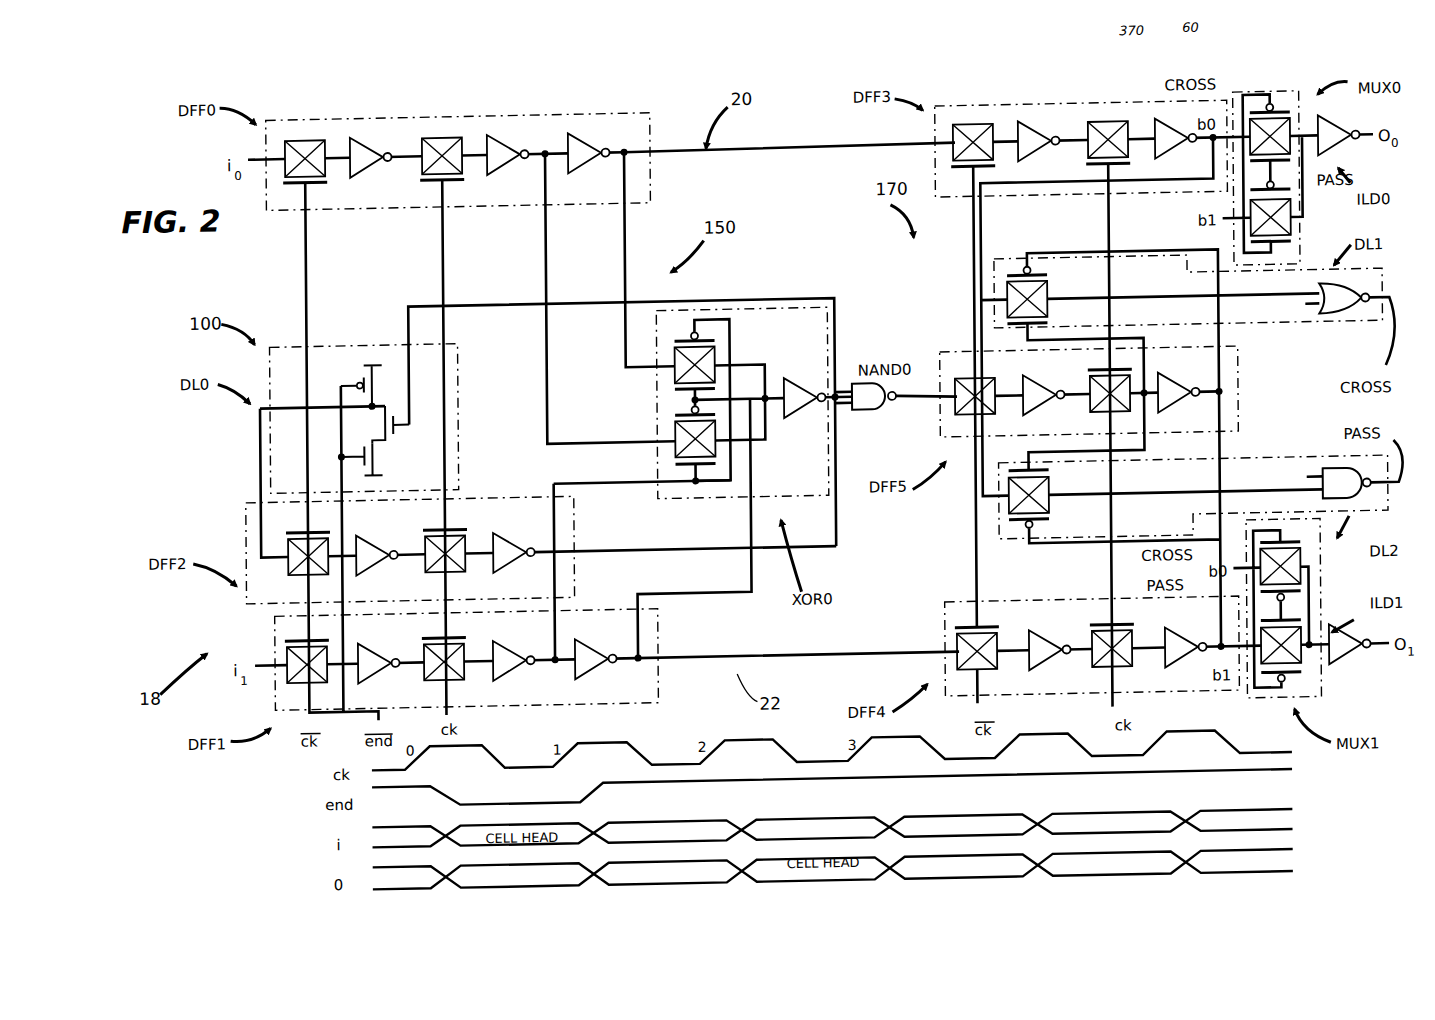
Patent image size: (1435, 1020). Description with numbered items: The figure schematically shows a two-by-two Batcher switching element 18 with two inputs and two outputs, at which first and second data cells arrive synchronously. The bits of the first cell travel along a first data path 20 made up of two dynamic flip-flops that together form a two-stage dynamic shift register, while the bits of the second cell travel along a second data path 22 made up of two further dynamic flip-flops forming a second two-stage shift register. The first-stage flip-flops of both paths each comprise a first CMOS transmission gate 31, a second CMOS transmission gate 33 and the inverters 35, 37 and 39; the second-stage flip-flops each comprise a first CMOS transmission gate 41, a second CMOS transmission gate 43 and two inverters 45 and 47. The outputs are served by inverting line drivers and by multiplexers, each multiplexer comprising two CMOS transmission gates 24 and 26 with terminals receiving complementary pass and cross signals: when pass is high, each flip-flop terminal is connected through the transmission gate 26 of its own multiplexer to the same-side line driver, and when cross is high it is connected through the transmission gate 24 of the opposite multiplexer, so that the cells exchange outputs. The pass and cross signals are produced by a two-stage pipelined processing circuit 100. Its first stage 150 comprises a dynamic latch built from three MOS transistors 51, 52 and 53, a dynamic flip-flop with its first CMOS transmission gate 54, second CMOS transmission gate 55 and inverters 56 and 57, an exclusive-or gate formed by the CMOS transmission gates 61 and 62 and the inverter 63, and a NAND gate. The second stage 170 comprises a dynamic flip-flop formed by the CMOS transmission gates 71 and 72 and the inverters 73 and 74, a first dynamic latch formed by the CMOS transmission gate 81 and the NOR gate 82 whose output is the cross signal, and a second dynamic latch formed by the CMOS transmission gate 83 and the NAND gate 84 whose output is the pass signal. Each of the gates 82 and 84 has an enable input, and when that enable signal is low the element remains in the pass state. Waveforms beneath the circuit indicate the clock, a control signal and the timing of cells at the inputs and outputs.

The Batcher switching element 18 is at (553, 409).
The first data path 20 is at (789, 148).
The second data path 22 is at (798, 655).
The CMOS transmission gate 24 is at (1292, 222).
The CMOS transmission gate 26 is at (1293, 131).
The first CMOS transmission gate 31 is at (320, 135).
The second CMOS transmission gate 33 is at (460, 135).
The inverter 35 is at (372, 135).
The inverter 37 is at (508, 135).
The inverter 39 is at (590, 134).
The first CMOS transmission gate 41 is at (985, 131).
The second CMOS transmission gate 43 is at (1122, 131).
The inverter 45 is at (1030, 130).
The inverter 47 is at (1170, 169).
The MOS transistor 51 is at (376, 370).
The MOS transistor 52 is at (394, 424).
The MOS transistor 53 is at (380, 455).
The first CMOS transmission gate 54 is at (292, 569).
The second CMOS transmission gate 55 is at (462, 532).
The inverter 56 is at (372, 570).
The inverter 57 is at (510, 531).
The CMOS transmission gate 61 is at (715, 352).
The CMOS transmission gate 62 is at (715, 452).
The inverter 63 is at (800, 381).
The CMOS transmission gate 71 is at (962, 385).
The CMOS transmission gate 72 is at (1130, 386).
The inverter 73 is at (1045, 392).
The inverter 74 is at (1178, 394).
The CMOS transmission gate 81 is at (1048, 305).
The NOR gate 82 is at (1350, 330).
The CMOS transmission gate 83 is at (1049, 495).
The NAND gate 84 is at (1330, 482).
The two stage pipelined processing circuit 100 is at (364, 419).
The first stage 150 is at (742, 402).
The second stage 170 is at (1162, 401).